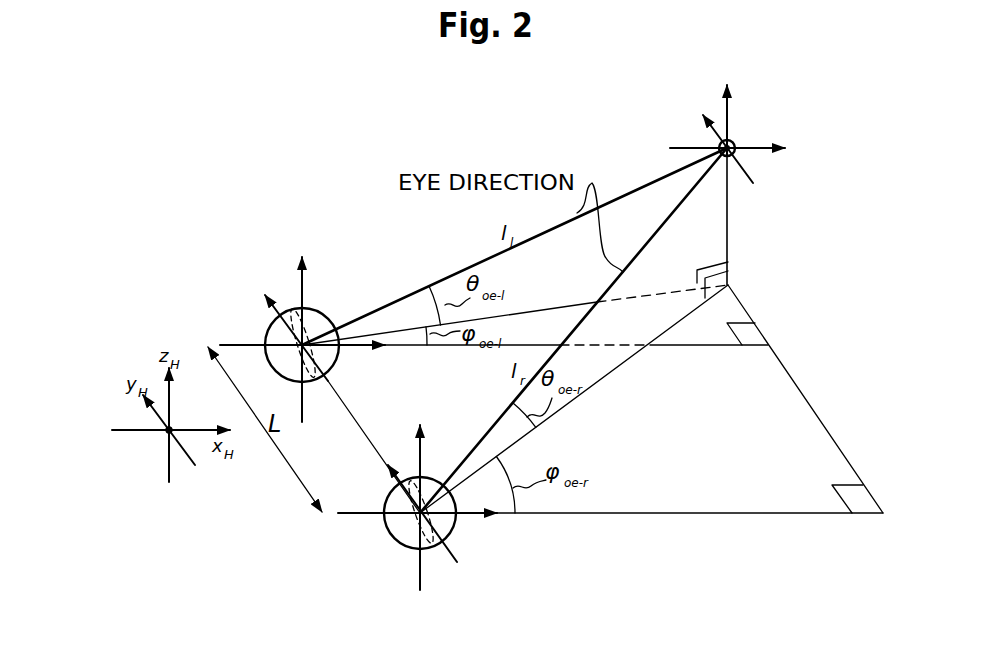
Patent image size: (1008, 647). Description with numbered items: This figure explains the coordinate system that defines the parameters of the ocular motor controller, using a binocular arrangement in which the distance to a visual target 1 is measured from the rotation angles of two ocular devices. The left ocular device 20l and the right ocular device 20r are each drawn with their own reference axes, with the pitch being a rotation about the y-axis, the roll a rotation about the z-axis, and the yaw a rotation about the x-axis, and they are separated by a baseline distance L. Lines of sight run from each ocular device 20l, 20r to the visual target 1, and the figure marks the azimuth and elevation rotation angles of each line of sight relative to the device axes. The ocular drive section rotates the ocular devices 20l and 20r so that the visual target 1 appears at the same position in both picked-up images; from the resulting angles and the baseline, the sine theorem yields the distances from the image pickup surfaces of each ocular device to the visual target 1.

The visual target 1 is at (735, 137).
The left ocular device 20l is at (318, 309).
The right ocular device 20r is at (397, 543).